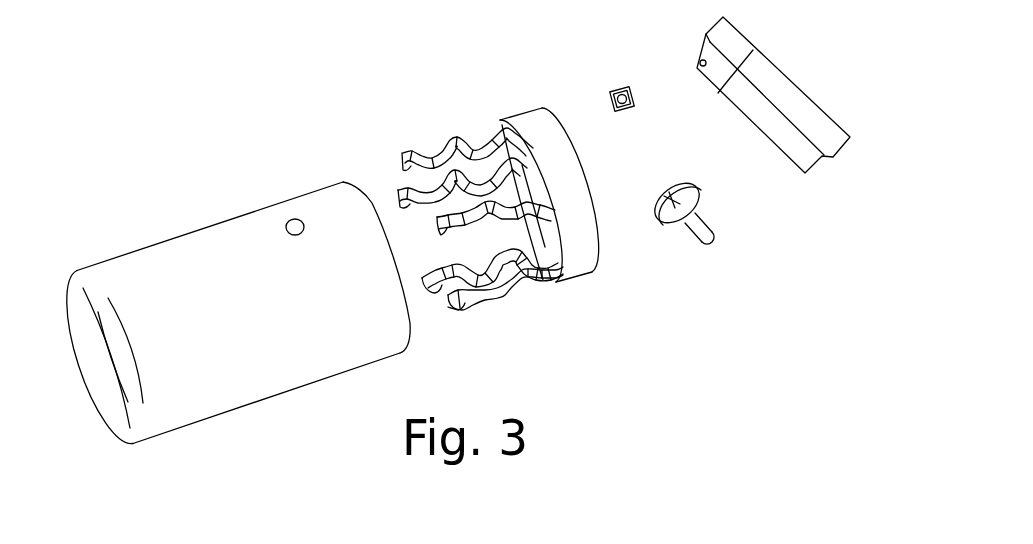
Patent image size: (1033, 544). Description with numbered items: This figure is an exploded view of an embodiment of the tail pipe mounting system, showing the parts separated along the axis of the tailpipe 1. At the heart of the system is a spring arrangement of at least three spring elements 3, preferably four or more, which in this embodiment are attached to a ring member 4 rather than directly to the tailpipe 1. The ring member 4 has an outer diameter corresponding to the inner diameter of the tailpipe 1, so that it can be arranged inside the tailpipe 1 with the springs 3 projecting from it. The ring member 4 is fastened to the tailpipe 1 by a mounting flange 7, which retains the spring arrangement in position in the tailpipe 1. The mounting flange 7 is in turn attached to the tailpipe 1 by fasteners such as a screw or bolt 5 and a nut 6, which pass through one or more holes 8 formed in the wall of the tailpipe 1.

The tailpipe 1 is at (210, 243).
The spring elements 3 is at (478, 180).
The ring member 4 is at (533, 110).
The screws or bolts 5 is at (697, 238).
The nuts 6 is at (627, 117).
The mounting flange 7 is at (760, 67).
The holes 8 is at (293, 219).